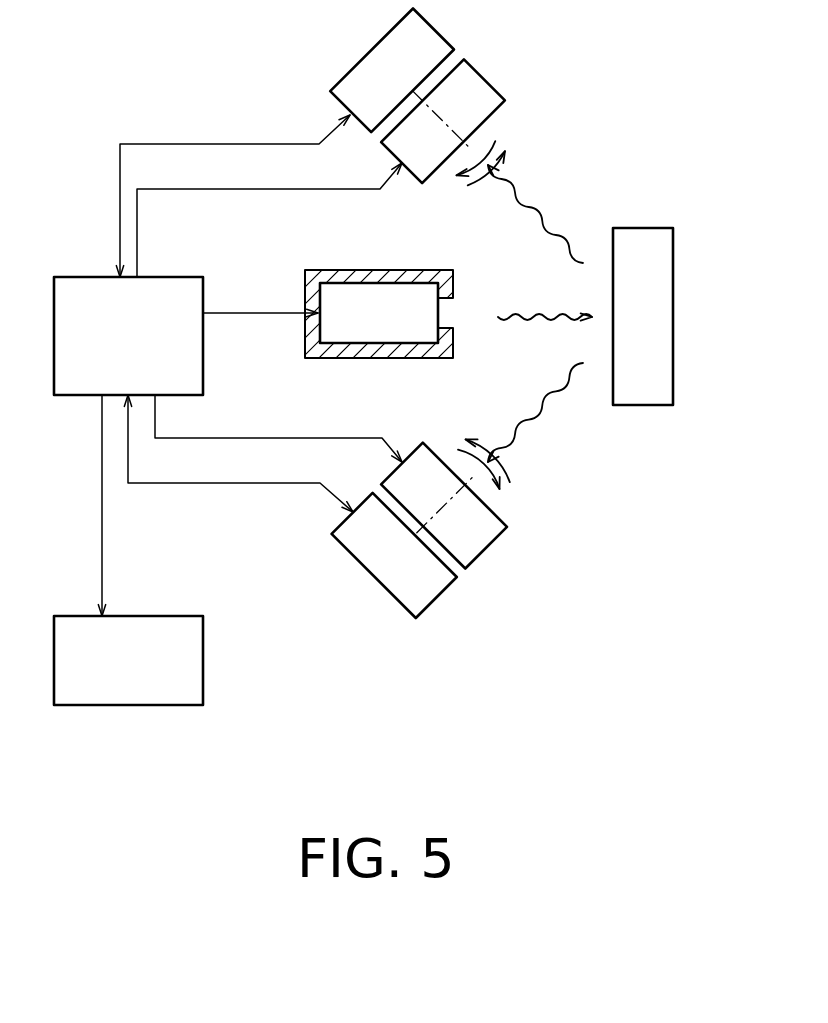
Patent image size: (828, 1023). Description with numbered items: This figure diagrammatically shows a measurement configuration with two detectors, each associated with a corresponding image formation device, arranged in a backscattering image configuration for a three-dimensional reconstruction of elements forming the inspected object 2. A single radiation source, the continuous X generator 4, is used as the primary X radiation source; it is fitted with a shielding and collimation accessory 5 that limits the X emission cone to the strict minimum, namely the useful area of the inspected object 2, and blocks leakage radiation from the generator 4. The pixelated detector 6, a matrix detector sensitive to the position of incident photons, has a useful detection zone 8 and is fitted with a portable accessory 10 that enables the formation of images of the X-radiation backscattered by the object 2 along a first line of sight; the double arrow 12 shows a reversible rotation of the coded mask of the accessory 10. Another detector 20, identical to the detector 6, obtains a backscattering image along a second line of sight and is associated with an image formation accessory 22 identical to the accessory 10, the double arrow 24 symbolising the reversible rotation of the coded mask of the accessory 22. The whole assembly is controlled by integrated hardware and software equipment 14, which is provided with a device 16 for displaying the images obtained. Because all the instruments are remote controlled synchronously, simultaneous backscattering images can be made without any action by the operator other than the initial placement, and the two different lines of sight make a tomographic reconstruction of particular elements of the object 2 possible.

The object 2 is at (637, 252).
The continuous X generator 4 is at (357, 330).
The shielding and collimation accessory 5 is at (357, 278).
The pixelated detector 6 is at (378, 70).
The useful detection zone 8 is at (452, 61).
The portable accessory 10 is at (477, 116).
The double arrow 12 is at (480, 172).
The integrated hardware and software equipment 14 is at (95, 303).
The display device 16 is at (103, 683).
The detector 20 is at (378, 557).
The image formation accessory 22 is at (477, 513).
The double arrow 24 is at (500, 471).